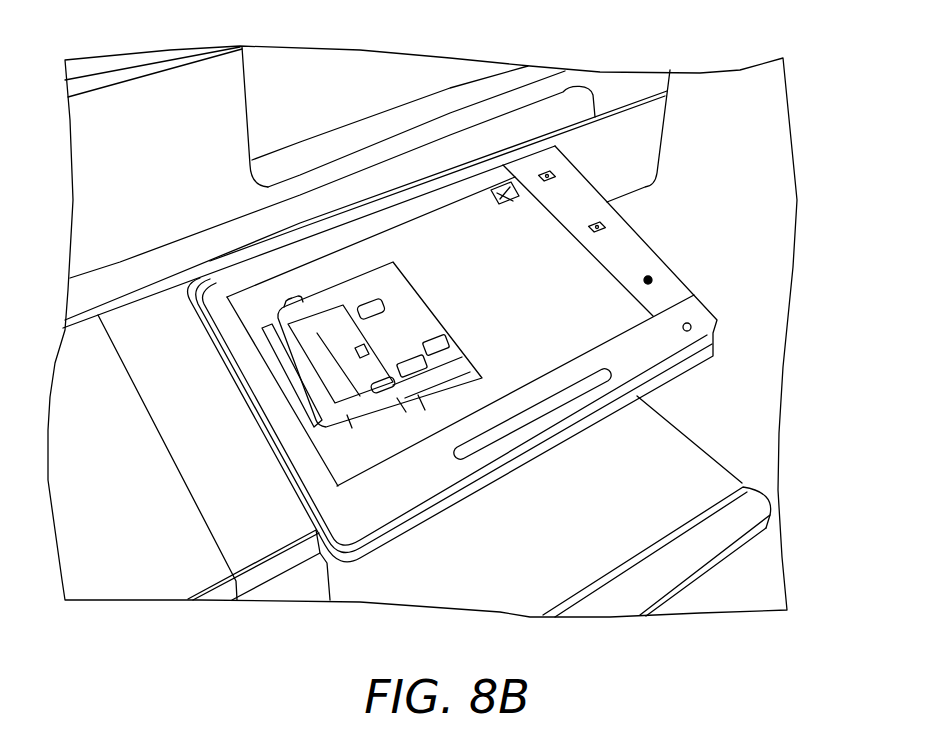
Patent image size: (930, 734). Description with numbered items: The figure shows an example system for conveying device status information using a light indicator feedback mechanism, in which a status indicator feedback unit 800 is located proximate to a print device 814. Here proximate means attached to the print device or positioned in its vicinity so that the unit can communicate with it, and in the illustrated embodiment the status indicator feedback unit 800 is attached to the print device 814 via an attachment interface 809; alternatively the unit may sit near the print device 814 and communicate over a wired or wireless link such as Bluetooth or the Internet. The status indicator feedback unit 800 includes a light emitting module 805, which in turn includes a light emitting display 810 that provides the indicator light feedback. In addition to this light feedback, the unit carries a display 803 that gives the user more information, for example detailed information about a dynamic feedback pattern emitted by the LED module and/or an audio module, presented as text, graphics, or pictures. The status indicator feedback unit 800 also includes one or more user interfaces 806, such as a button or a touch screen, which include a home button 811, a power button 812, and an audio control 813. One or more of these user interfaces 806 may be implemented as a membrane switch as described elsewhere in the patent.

The status indicator feedback unit 800 is at (290, 428).
The display 803 is at (447, 394).
The light emitting module 805 is at (387, 498).
The user interfaces 806 is at (535, 158).
The attachment interface 809 is at (477, 163).
The light emitting display 810 is at (487, 442).
The home button 811 is at (550, 172).
The power button 812 is at (598, 223).
The audio control 813 is at (650, 275).
The print device 814 is at (230, 87).